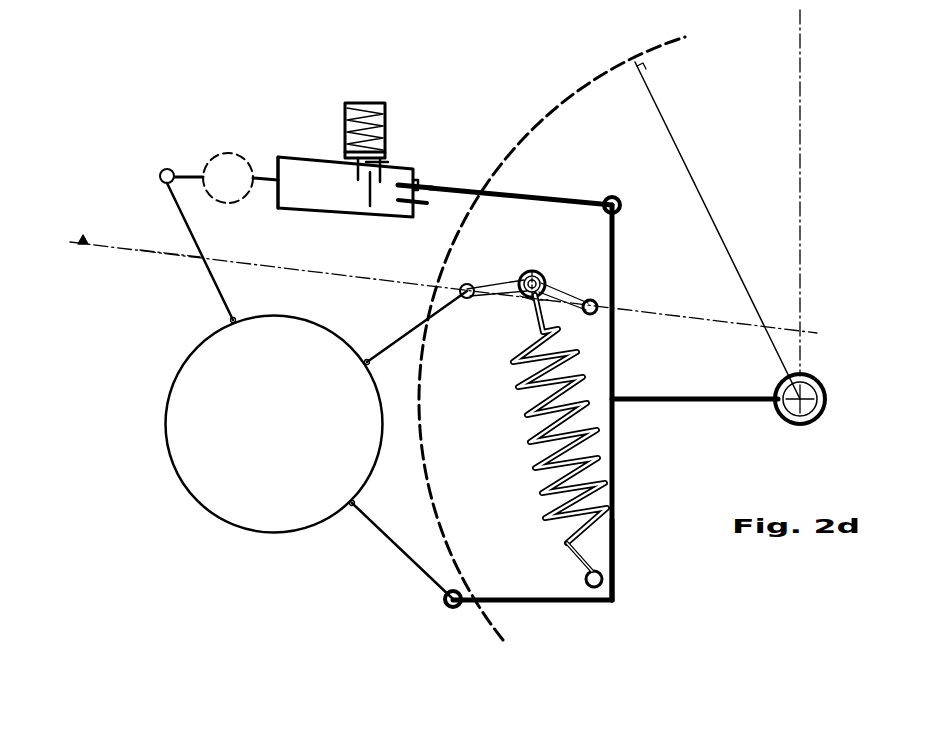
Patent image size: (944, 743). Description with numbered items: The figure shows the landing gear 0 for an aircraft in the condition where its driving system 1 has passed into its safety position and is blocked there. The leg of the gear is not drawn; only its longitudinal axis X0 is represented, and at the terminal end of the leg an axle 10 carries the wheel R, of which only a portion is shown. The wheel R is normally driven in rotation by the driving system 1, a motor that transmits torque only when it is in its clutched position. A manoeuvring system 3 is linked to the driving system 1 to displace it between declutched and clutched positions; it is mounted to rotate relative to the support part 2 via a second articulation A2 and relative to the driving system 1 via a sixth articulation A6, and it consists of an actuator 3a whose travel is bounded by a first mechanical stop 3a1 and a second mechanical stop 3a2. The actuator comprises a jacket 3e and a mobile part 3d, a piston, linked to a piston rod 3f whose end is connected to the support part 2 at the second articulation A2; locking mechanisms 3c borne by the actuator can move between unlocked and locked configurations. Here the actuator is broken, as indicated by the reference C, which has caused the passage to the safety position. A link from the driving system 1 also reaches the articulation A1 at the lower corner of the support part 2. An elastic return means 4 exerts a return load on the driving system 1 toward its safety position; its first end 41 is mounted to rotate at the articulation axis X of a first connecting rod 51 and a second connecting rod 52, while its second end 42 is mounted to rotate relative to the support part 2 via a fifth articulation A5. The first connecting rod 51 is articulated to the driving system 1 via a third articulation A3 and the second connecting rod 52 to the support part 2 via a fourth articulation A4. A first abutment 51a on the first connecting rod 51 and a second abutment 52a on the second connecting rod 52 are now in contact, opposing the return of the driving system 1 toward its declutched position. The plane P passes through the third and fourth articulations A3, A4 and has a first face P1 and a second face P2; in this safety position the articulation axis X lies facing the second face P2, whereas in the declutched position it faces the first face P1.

The landing gear 0 is at (210, 102).
The driving system 1 is at (165, 420).
The support part 2 is at (614, 368).
The manoeuvring system 3 is at (310, 157).
The actuator 3a is at (430, 187).
The first mechanical stop 3a1 is at (385, 166).
The second mechanical stop 3a2 is at (290, 158).
The locking mechanisms 3c is at (358, 182).
The mobile part 3d is at (370, 206).
The jacket 3e is at (415, 172).
The piston rod 3f is at (540, 195).
The elastic return means 4 is at (530, 460).
The axle 10 is at (786, 420).
The first end of the elastic return means 41 is at (532, 271).
The second end of the elastic return means 42 is at (614, 548).
The first connecting rod 51 is at (512, 283).
The first abutment 51a is at (520, 298).
The second connecting rod 52 is at (575, 294).
The second abutment 52a is at (528, 302).
The pivot point A1 is at (450, 615).
The second articulation A2 is at (614, 193).
The third articulation A3 is at (461, 278).
The fourth articulation A4 is at (591, 295).
The fifth articulation A5 is at (577, 578).
The sixth articulation A6 is at (165, 165).
The break of the actuator C is at (222, 155).
The plane P is at (84, 238).
The first face of the plane P1 is at (138, 259).
The second face of the plane P2 is at (158, 252).
The wheel R is at (556, 100).
The articulation axis of the connecting rods X is at (543, 272).
The longitudinal axis of the leg X0 is at (800, 32).